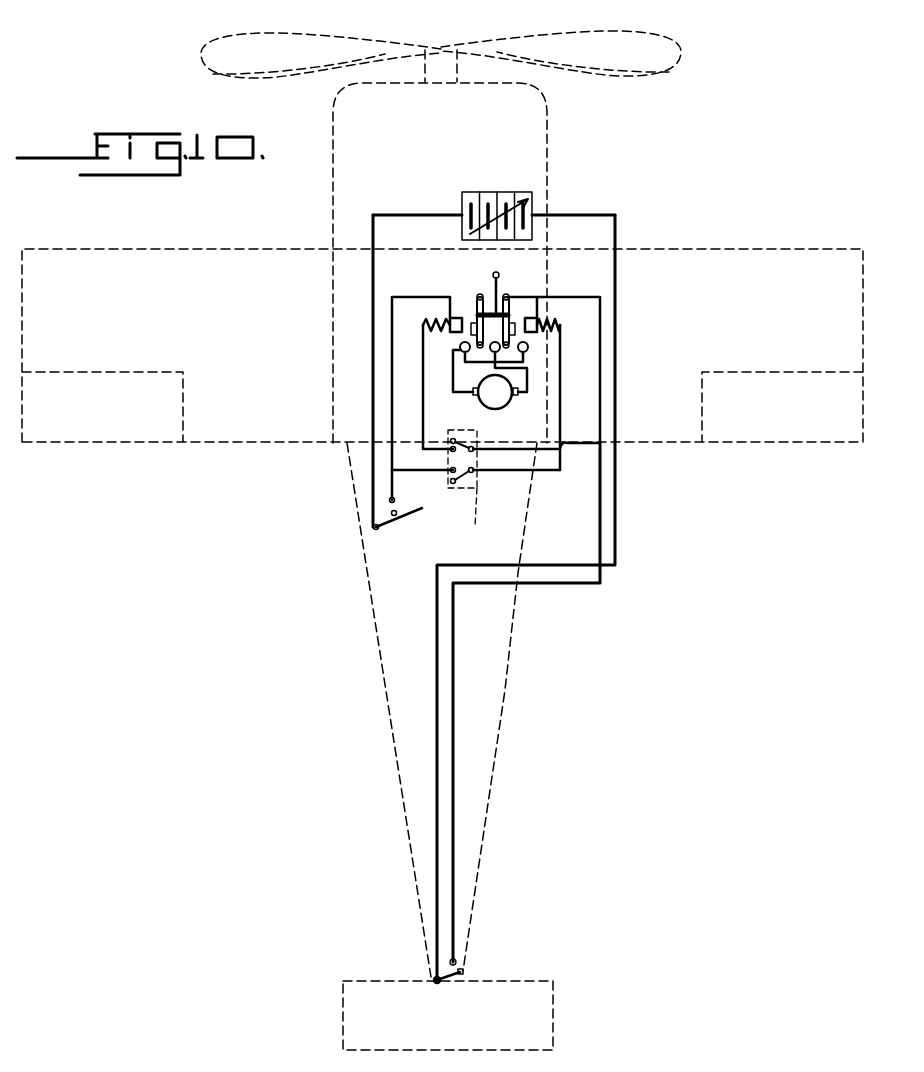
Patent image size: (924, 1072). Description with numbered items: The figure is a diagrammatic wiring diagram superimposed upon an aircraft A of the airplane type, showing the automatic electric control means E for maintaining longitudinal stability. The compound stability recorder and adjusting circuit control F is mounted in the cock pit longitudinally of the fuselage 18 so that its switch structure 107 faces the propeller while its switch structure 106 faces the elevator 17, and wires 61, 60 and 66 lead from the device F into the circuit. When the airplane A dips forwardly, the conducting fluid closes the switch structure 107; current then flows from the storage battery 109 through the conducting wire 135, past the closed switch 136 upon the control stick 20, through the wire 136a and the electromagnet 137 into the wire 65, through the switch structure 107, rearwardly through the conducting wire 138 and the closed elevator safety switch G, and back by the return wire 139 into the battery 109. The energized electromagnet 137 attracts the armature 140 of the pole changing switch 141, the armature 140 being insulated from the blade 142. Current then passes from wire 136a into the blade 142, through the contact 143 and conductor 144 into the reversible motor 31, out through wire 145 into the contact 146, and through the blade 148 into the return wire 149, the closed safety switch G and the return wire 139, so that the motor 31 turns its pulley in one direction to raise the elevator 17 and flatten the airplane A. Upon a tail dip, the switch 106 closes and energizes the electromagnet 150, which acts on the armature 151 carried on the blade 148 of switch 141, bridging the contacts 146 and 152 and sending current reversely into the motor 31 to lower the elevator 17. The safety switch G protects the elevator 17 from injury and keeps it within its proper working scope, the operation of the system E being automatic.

The storage battery 109 is at (476, 196).
The conducting wire 135 is at (372, 275).
The switch 136 is at (375, 527).
The wire 136a is at (404, 298).
The electromagnet 137 is at (443, 320).
The conducting wire 138 is at (542, 563).
The return wire 139 is at (617, 517).
The armature 140 is at (460, 348).
The pole changing switch 141 is at (505, 286).
The blade 142 is at (478, 315).
The contact 143 is at (453, 358).
The conductor 144 is at (468, 391).
The wire 145 is at (525, 392).
The contact 146 is at (483, 360).
The blade 148 is at (508, 309).
The return wire 149 is at (557, 298).
The electromagnet 150 is at (552, 322).
The armature 151 is at (528, 348).
The contact 152 is at (526, 357).
The reversible motor 31 is at (505, 402).
The wire 65 is at (421, 428).
The wire 66 is at (587, 451).
The switch structure 107 is at (465, 442).
The switch structure 106 is at (463, 500).
The conducting wire 61 is at (423, 472).
The wire 60 is at (515, 472).
The control stick 20 is at (412, 518).
The fuselage 18 is at (512, 642).
The elevator 17 is at (523, 981).
The aircraft A is at (257, 443).
The automatic electric control means E is at (580, 215).
The compound stability recorder and adjusting circuit control F is at (468, 487).
The safety switch G is at (458, 981).